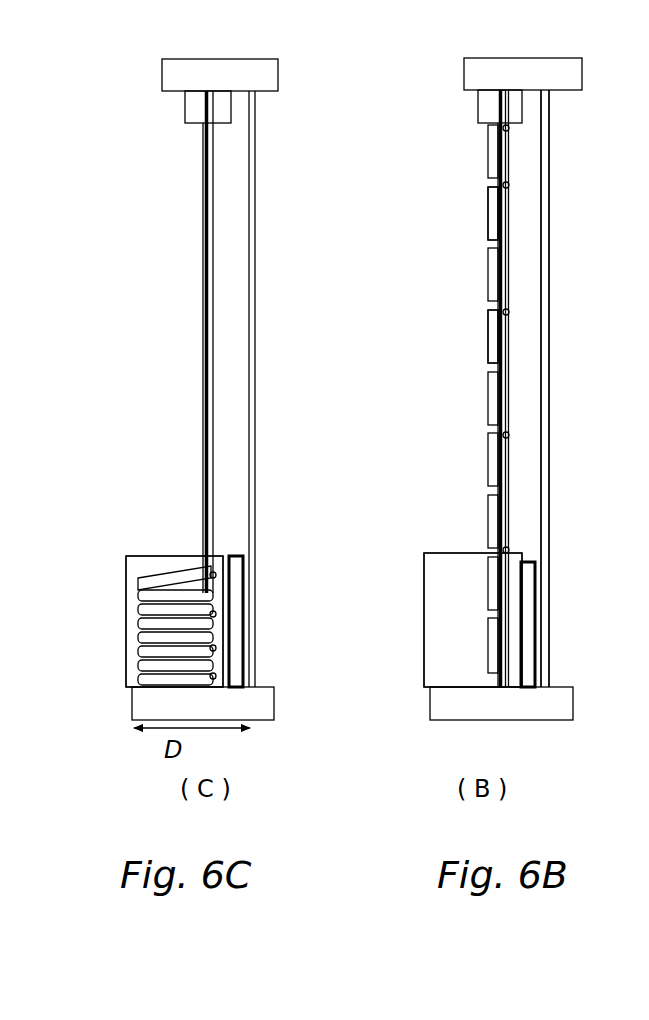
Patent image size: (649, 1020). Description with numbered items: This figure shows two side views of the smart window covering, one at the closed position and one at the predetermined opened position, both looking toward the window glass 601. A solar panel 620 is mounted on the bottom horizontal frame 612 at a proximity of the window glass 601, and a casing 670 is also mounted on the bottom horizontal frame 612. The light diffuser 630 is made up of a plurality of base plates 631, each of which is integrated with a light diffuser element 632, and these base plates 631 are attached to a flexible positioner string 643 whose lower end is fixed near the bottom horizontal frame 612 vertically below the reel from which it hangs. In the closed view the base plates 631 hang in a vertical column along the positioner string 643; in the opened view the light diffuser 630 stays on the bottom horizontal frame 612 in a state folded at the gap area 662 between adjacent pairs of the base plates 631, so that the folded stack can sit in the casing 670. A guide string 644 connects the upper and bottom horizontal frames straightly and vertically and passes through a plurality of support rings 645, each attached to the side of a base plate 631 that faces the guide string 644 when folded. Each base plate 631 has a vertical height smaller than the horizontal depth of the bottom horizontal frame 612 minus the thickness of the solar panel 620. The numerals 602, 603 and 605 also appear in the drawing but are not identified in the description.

In FIG. 6B, the window glass 601 is at (556, 635).
In FIG. 6B, the guide rail 602 is at (554, 266).
In FIG. 6B, the guide rail 603 is at (633, 263).
In FIG. 6C, the housing 605 is at (135, 614).
In FIG. 6C, the bottom horizontal frame 612 is at (276, 702).
In FIG. 6B, the bottom horizontal frame 612 is at (429, 712).
In FIG. 6B, the solar panel 620 is at (541, 605).
In FIG. 6C, the light diffuser 630 is at (132, 635).
In FIG. 6B, the light diffuser 630 is at (478, 340).
In FIG. 6C, the base plate 631 is at (162, 570).
In FIG. 6B, the base plate 631 is at (490, 410).
In FIG. 6B, the light diffuser element 632 is at (486, 222).
In FIG. 6C, the positioner string 643 is at (200, 455).
In FIG. 6B, the positioner string 643 is at (492, 280).
In FIG. 6C, the guide string 644 is at (217, 313).
In FIG. 6B, the guide string 644 is at (511, 398).
In FIG. 6C, the support ring 645 is at (221, 572).
In FIG. 6B, the support ring 645 is at (516, 180).
In FIG. 6C, the gap area 662 is at (137, 592).
In FIG. 6C, the casing 670 is at (122, 553).
In FIG. 6B, the casing 670 is at (536, 594).